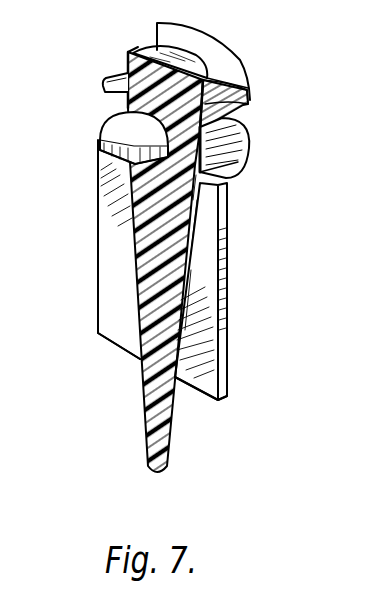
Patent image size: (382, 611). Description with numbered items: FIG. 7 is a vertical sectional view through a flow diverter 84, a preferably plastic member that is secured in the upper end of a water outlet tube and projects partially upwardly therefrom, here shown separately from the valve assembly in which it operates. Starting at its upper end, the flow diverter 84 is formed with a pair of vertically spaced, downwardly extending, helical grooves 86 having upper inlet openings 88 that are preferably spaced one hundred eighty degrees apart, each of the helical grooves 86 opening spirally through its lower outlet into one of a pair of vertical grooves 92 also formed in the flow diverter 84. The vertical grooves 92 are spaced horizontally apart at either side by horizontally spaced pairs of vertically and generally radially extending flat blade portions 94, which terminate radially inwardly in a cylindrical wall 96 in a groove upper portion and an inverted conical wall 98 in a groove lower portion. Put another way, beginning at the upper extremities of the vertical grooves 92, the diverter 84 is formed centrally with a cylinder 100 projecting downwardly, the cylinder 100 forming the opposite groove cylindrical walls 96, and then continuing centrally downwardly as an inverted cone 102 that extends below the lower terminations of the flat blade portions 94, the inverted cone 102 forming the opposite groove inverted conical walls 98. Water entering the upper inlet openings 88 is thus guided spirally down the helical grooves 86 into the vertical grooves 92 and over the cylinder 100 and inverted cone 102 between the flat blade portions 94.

The flow diverter 84 is at (108, 290).
The helical grooves 86 is at (118, 122).
The upper inlet openings 88 is at (157, 32).
The vertical grooves 92 is at (228, 281).
The flat blade portions 94 is at (113, 318).
The cylindrical wall 96 is at (128, 63).
The inverted conical wall 98 is at (127, 165).
The cylinder 100 is at (183, 60).
The inverted cone 102 is at (174, 443).